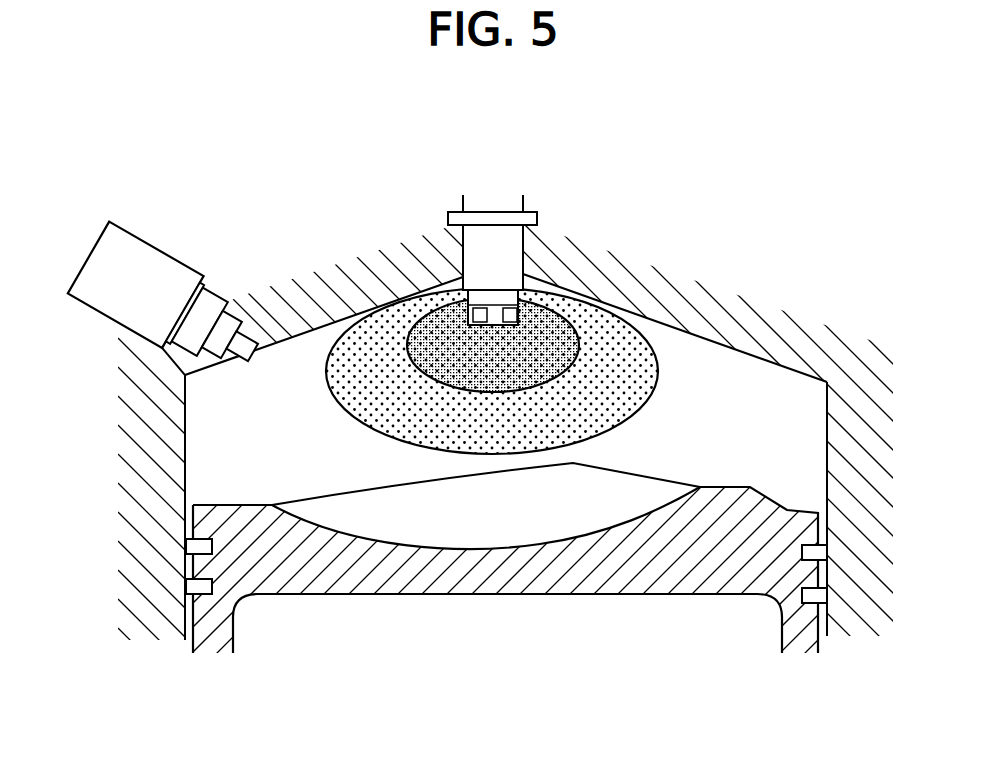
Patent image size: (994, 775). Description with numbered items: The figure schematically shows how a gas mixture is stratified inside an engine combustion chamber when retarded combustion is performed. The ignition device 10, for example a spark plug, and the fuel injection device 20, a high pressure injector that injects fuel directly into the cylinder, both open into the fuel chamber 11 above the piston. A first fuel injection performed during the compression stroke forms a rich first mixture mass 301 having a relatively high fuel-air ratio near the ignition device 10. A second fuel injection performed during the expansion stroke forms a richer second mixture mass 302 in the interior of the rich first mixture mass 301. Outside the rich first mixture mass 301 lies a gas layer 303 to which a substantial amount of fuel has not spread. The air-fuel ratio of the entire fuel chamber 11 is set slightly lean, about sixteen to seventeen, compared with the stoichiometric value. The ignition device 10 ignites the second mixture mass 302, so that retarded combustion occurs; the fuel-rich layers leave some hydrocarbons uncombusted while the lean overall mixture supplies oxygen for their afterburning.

The ignition device 10 is at (507, 258).
The fuel injection device 20 is at (138, 265).
The fuel chamber 11 is at (222, 443).
The rich first mixture mass 301 is at (593, 383).
The second mixture mass 302 is at (553, 340).
The gas layer 303 is at (713, 380).